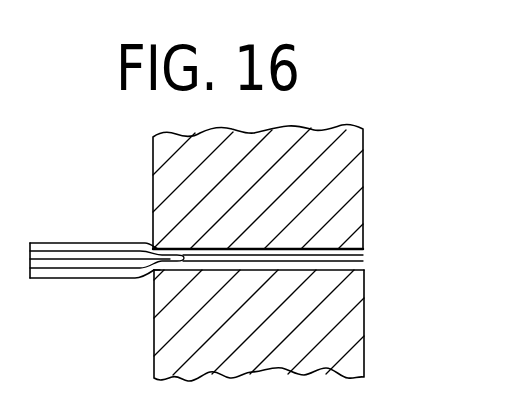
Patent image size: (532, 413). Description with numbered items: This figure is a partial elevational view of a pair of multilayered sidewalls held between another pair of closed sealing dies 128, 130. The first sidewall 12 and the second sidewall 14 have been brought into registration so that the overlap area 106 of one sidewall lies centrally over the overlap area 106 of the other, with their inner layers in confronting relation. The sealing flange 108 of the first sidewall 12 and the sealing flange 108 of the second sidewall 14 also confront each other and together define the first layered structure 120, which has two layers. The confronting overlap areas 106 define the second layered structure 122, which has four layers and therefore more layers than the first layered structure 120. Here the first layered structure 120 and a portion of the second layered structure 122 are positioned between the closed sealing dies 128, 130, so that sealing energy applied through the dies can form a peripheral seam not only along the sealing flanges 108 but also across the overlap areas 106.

The first sidewall 12 is at (87, 242).
The second sidewall 14 is at (34, 280).
The overlap area 106 is at (120, 250).
The sealing flange 108 is at (364, 254).
The first layered structure 120 is at (321, 247).
The second layered structure 122 is at (157, 274).
The sealing die 128 is at (350, 140).
The sealing die 130 is at (352, 316).